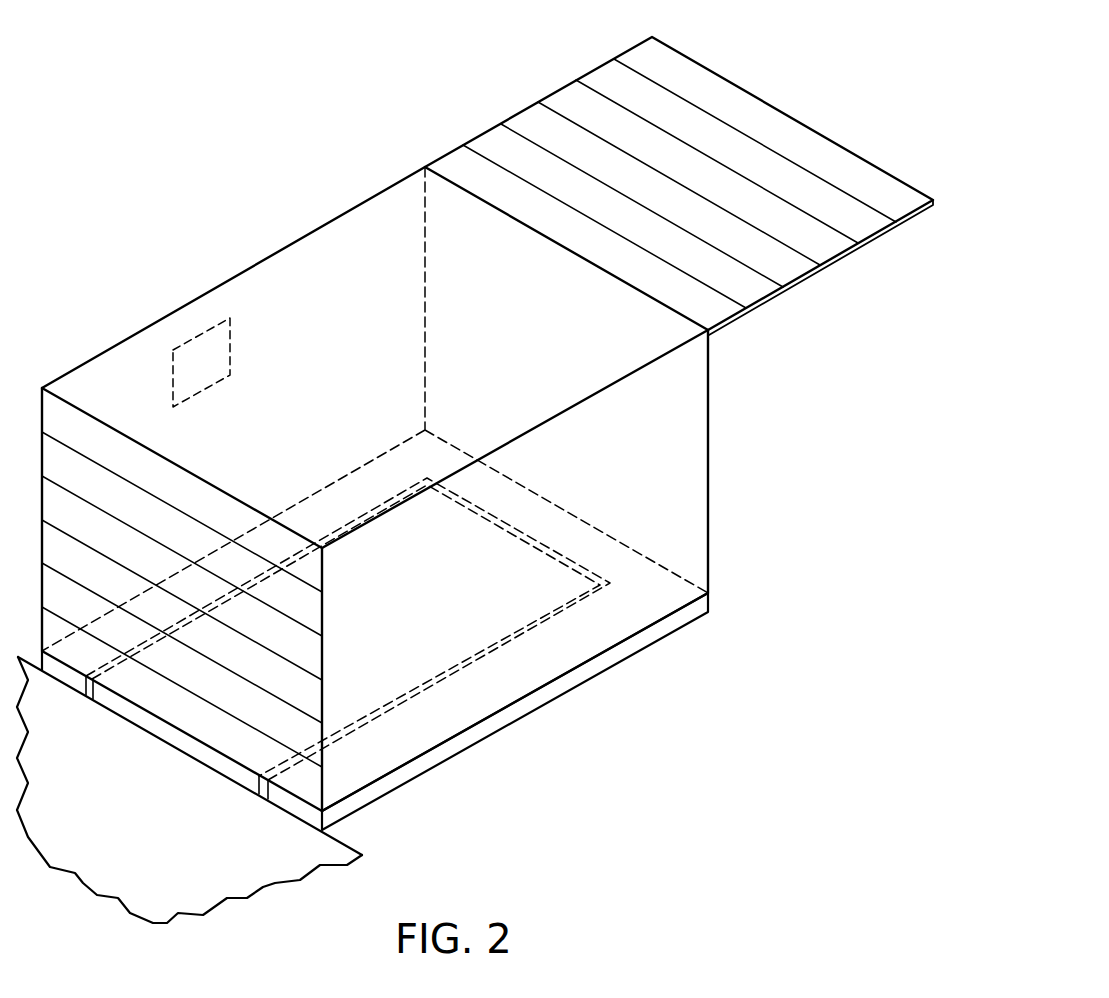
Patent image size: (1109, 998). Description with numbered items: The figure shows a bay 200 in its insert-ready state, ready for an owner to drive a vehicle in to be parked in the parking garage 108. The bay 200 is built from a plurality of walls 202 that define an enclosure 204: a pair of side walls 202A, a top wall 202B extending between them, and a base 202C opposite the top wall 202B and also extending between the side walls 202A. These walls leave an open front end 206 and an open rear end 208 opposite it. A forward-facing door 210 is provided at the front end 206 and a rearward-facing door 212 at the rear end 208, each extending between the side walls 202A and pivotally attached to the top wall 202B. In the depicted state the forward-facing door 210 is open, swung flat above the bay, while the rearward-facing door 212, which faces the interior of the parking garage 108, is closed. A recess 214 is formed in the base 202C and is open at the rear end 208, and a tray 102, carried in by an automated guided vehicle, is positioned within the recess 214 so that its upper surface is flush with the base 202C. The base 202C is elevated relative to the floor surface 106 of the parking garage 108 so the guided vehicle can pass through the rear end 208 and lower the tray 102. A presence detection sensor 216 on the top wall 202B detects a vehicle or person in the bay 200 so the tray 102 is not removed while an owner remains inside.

The bay 200 is at (197, 201).
The enclosure 204 is at (284, 195).
The walls 202 is at (434, 481).
The side walls 202A is at (648, 615).
The top wall 202B is at (398, 193).
The base 202C is at (470, 716).
The front end 206 is at (708, 470).
The rear end 208 is at (322, 768).
The forward-facing door 210 is at (716, 84).
The rearward-facing door 212 is at (312, 615).
The recess 214 is at (528, 644).
The tray 102 is at (520, 535).
The presence detection sensor 216 is at (209, 386).
The floor surface 106 is at (167, 903).
The parking garage 108 is at (245, 878).